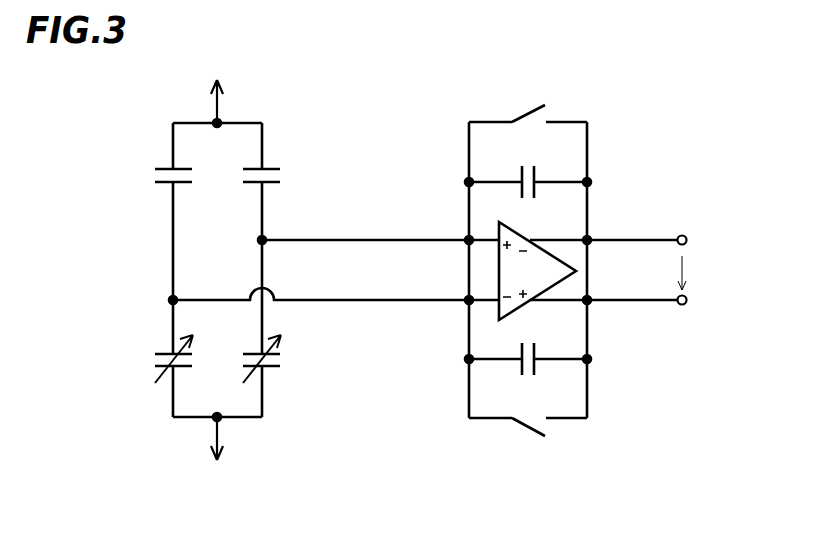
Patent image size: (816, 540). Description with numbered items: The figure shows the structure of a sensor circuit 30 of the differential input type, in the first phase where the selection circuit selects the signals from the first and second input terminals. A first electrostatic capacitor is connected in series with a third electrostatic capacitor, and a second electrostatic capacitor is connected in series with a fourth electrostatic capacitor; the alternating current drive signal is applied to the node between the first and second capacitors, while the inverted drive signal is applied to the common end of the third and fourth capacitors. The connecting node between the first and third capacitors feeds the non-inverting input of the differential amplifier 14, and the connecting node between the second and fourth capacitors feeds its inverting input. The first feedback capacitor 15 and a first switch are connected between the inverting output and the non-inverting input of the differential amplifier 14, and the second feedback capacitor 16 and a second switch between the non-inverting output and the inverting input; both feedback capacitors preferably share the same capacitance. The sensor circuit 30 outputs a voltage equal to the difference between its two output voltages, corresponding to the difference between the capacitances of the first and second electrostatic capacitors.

The sensor circuit 30 is at (382, 108).
The differential amplifier 14 is at (585, 271).
The first feedback capacitor 15 is at (572, 165).
The second feedback capacitor 16 is at (572, 345).